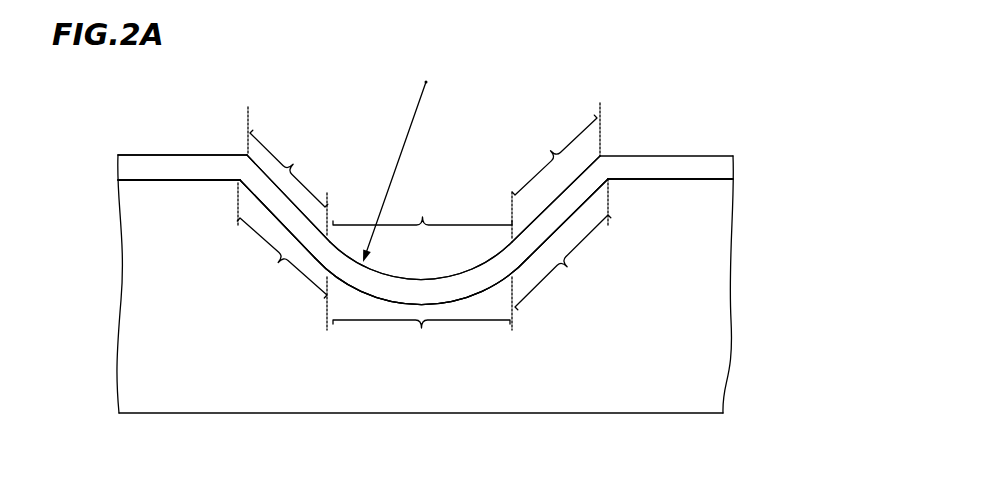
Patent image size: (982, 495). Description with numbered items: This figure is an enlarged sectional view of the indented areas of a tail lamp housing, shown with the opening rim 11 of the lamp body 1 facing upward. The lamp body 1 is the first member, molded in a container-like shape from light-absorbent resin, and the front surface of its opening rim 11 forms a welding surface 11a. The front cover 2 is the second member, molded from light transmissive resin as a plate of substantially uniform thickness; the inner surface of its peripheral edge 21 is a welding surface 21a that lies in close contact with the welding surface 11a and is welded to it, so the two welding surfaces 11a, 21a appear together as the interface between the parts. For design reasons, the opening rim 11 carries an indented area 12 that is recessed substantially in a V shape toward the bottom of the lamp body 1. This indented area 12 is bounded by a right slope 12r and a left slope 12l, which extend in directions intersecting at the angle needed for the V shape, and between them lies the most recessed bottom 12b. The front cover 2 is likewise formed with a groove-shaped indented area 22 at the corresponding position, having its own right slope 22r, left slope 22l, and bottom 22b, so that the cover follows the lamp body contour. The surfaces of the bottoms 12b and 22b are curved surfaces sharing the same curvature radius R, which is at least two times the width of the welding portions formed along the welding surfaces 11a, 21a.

The lamp body 1 is at (710, 397).
The front cover 2 is at (703, 163).
The opening rim 11 is at (148, 193).
The indented area 12 is at (523, 265).
The left slope 12l is at (278, 262).
The right slope 12r is at (567, 267).
The bottom 12b is at (422, 328).
The peripheral edge 21 is at (148, 167).
The indented area 22 is at (583, 175).
The left slope 22l is at (293, 163).
The right slope 22r is at (550, 150).
The bottom 22b is at (422, 217).
The welding surface 11a is at (687, 180).
The welding surface 21a is at (687, 180).
The curvature radius R is at (388, 170).